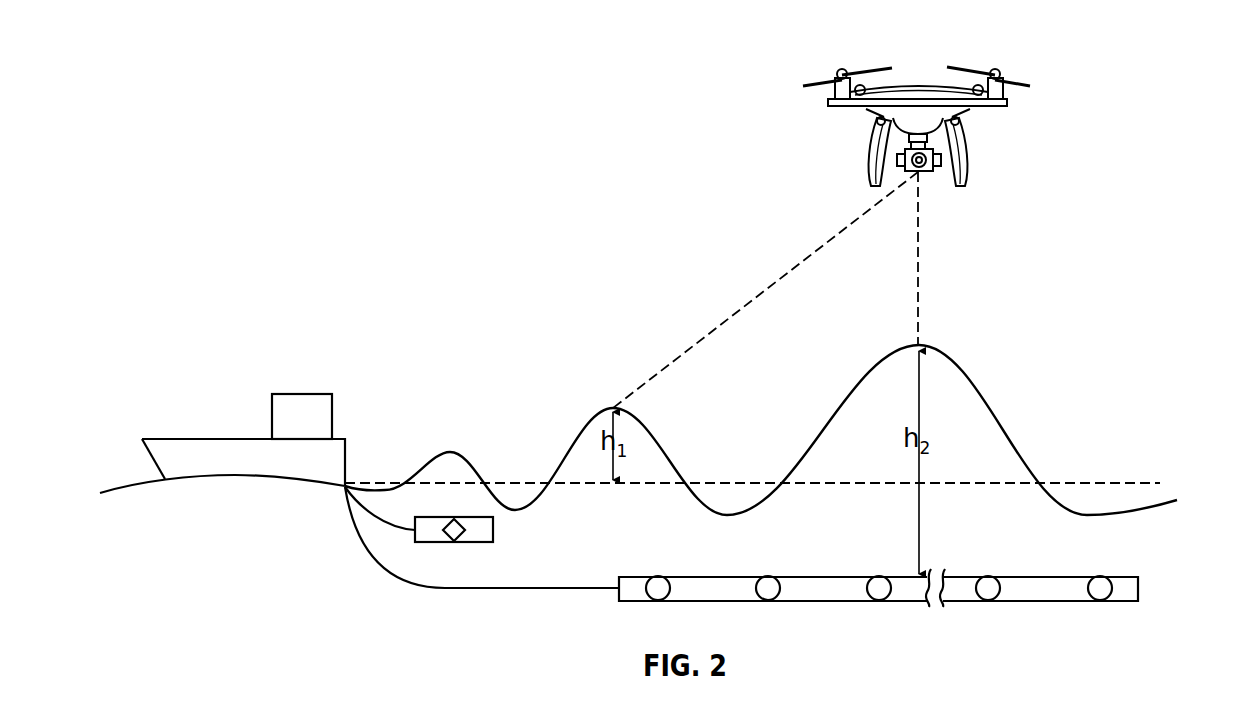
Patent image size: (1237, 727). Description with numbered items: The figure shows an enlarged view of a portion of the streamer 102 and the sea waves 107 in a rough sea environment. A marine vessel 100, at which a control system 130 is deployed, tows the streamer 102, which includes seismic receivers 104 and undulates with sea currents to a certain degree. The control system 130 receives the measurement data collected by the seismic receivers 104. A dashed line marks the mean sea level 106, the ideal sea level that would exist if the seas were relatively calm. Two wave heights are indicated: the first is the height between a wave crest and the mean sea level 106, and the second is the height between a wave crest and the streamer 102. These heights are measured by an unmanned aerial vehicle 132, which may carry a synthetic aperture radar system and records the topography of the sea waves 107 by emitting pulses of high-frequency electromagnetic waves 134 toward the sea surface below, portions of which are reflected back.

The marine vessel 100 is at (224, 437).
The control system 130 is at (332, 418).
The streamer 102 is at (1139, 588).
The seismic receivers 104 is at (655, 578).
The mean sea level 106 is at (1108, 482).
The sea waves 107 is at (626, 411).
The unmanned aerial vehicle 132 is at (963, 152).
The high-frequency electromagnetic waves 134 is at (722, 320).